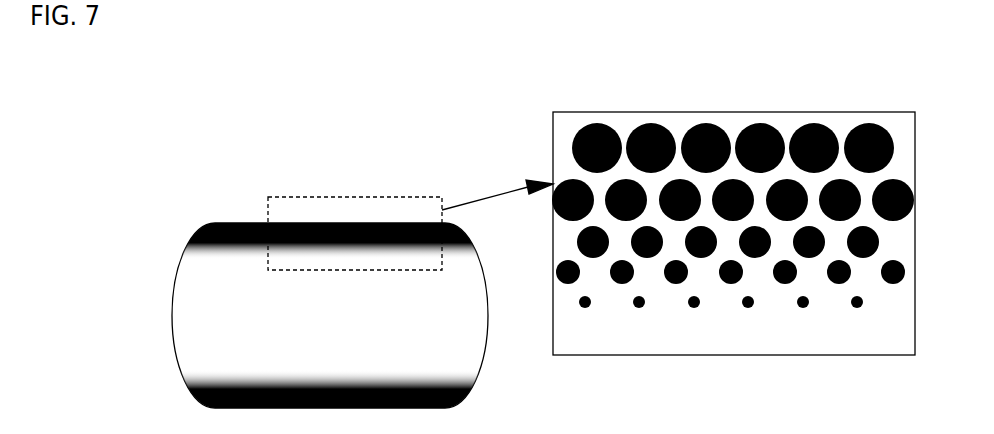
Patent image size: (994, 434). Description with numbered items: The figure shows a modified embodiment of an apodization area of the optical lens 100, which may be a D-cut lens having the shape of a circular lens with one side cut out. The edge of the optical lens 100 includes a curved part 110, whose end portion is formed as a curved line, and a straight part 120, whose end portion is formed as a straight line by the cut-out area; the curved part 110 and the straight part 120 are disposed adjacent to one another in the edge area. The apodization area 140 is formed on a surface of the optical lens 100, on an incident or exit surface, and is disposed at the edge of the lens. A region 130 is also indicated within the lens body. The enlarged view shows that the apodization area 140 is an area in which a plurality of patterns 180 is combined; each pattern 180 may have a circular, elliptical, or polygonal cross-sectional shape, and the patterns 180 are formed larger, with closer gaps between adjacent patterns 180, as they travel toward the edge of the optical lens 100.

The optical lens 100 is at (172, 110).
The curved part 110 is at (172, 302).
The straight part 120 is at (254, 223).
The interior region 130 is at (383, 320).
The apodization area 140 is at (352, 223).
The pattern 180 is at (652, 122).